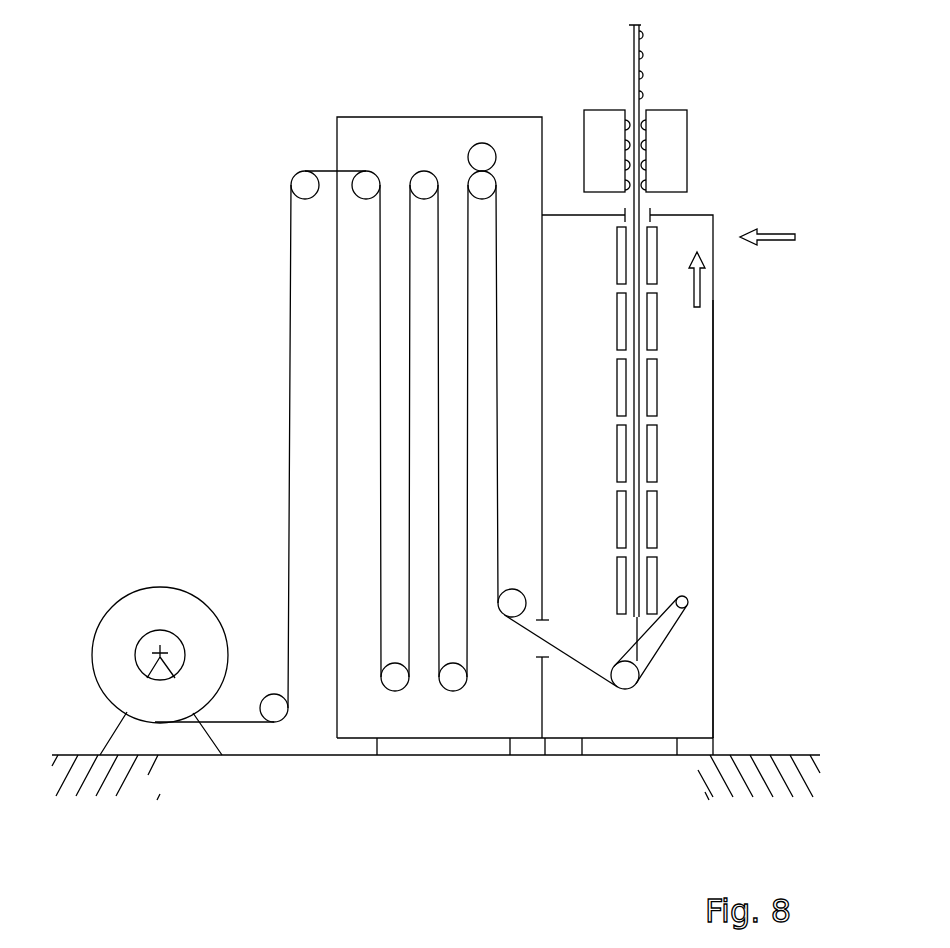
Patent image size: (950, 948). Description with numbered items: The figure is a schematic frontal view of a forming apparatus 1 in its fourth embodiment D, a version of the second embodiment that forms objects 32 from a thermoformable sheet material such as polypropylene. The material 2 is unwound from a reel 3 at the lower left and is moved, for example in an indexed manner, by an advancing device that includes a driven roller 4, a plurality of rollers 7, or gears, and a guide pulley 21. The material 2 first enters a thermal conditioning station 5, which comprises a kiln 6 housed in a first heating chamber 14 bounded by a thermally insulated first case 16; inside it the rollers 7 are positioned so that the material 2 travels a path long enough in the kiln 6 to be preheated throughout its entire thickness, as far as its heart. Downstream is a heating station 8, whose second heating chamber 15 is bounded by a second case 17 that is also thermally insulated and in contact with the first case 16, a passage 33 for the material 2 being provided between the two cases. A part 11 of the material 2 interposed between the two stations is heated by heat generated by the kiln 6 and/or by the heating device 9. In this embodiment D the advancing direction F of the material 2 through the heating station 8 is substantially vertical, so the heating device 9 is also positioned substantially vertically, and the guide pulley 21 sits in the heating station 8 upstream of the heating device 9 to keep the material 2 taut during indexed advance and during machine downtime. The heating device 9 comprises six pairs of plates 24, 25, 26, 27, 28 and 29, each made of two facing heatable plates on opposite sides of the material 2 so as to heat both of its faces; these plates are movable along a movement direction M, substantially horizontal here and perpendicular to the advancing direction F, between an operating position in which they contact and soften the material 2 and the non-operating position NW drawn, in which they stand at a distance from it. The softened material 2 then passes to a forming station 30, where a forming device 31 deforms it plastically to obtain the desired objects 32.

The forming apparatus 1 is at (240, 108).
The fourth embodiment D is at (211, 157).
The material 2 is at (291, 432).
The reel 3 is at (125, 620).
The driven roller 4 is at (481, 155).
The thermal conditioning station 5 is at (395, 82).
The kiln 6 is at (360, 540).
The rollers 7 is at (305, 185).
The heating station 8 is at (714, 196).
The heating device 9 is at (680, 390).
The part of the material 11 is at (557, 651).
The first heating chamber 14 is at (490, 707).
The second heating chamber 15 is at (670, 717).
The first case 16 is at (497, 117).
The second case 17 is at (713, 557).
The guide pulley 21 is at (627, 687).
The pair of plates 24 is at (596, 588).
The pair of plates 25 is at (596, 520).
The pair of plates 26 is at (596, 455).
The pair of plates 27 is at (596, 390).
The pair of plates 28 is at (596, 325).
The pair of plates 29 is at (596, 258).
The forming station 30 is at (713, 124).
The forming device 31 is at (604, 110).
The objects 32 is at (640, 33).
The passage 33 is at (548, 628).
The advancing direction F is at (694, 290).
The movement direction M is at (768, 240).
The non-operating position NW is at (681, 457).